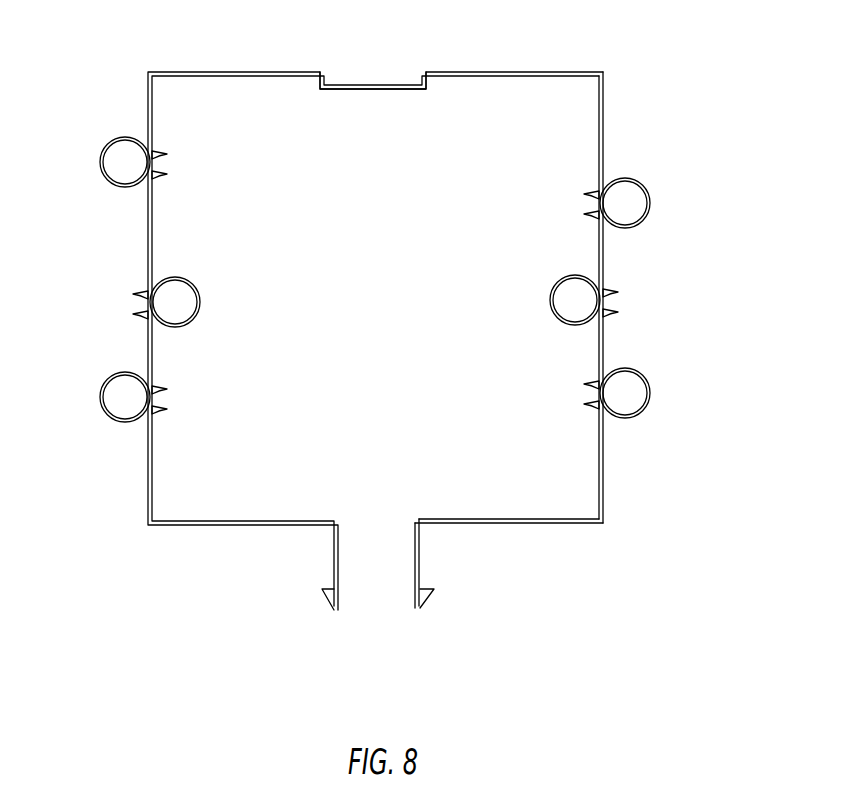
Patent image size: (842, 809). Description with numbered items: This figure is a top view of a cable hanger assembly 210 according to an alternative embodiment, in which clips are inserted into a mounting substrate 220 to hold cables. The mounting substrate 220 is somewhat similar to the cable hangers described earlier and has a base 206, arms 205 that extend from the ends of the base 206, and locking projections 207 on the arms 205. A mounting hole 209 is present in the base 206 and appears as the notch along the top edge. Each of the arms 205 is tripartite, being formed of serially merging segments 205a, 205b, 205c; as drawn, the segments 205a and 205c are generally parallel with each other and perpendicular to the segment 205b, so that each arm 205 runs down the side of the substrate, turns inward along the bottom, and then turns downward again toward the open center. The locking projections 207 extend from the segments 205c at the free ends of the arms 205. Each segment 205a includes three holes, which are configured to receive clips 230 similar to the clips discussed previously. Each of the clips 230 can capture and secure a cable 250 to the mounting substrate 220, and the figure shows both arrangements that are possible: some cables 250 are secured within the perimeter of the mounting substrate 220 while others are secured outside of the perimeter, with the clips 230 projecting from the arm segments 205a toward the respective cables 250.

The arms 205 is at (580, 340).
The arm segment 205a is at (604, 250).
The arm segment 205b is at (533, 523).
The arm segment 205c is at (420, 558).
The base 206 is at (375, 312).
The locking projection 207 is at (433, 592).
The mounting hole 209 is at (367, 86).
The cable hanger assembly 210 is at (712, 162).
The mounting substrate 220 is at (619, 104).
The clip 230 is at (650, 205).
The cable 250 is at (630, 193).